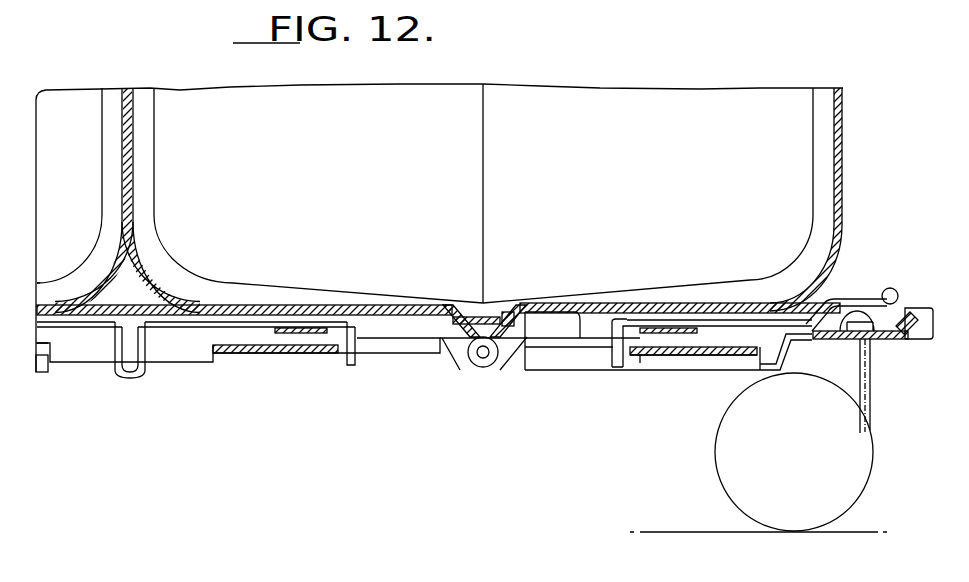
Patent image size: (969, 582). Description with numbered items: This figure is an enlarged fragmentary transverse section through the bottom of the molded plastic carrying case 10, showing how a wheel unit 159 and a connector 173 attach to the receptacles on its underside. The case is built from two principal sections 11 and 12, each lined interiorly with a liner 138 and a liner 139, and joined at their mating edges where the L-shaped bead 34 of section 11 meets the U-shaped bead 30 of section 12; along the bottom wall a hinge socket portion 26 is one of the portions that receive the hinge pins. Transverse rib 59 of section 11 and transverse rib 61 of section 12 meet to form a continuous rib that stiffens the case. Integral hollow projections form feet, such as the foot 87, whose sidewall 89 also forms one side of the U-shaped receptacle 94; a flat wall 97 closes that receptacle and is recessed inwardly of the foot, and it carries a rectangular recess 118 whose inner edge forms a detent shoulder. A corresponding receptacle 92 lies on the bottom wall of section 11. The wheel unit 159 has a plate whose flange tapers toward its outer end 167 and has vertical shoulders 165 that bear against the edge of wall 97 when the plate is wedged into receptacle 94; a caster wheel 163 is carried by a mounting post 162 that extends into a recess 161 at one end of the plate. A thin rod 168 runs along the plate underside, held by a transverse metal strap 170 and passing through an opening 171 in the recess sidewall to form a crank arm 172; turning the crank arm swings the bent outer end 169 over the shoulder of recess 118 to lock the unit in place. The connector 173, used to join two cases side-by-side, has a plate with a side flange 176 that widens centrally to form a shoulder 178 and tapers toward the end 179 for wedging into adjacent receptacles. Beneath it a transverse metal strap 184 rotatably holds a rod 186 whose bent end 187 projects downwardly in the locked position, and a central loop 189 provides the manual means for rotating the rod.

The carrying case 10 is at (78, 70).
The case section 11 is at (207, 90).
The case section 12 is at (843, 137).
The hinge socket portion 26 is at (470, 352).
The bead 30 is at (500, 354).
The bead 34 is at (446, 340).
The transverse rib 59 is at (158, 280).
The transverse rib 61 is at (102, 265).
The foot 87 is at (552, 372).
The sidewall 89 is at (527, 372).
The receptacle 92 is at (285, 356).
The receptacle 94 is at (42, 374).
The flat wall 97 is at (698, 357).
The rectangular recess 118 is at (625, 306).
The liner 138 is at (292, 95).
The liner 139 is at (630, 97).
The wheel unit 159 is at (886, 344).
The recess 161 is at (899, 302).
The mounting post 162 is at (872, 398).
The caster wheel 163 is at (724, 464).
The vertical shoulder 165 is at (750, 357).
The outer end 167 is at (580, 302).
The rod 168 is at (718, 317).
The outer end 169 is at (612, 368).
The transverse metal strap 170 is at (680, 334).
The opening 171 is at (823, 337).
The crank arm 172 is at (862, 296).
The connector 173 is at (105, 376).
The side flange 176 is at (188, 360).
The shoulder 178 is at (215, 363).
The end 179 is at (402, 306).
The transverse metal strap 184 is at (300, 335).
The rod 186 is at (255, 313).
The end 187 is at (352, 367).
The loop 189 is at (47, 365).